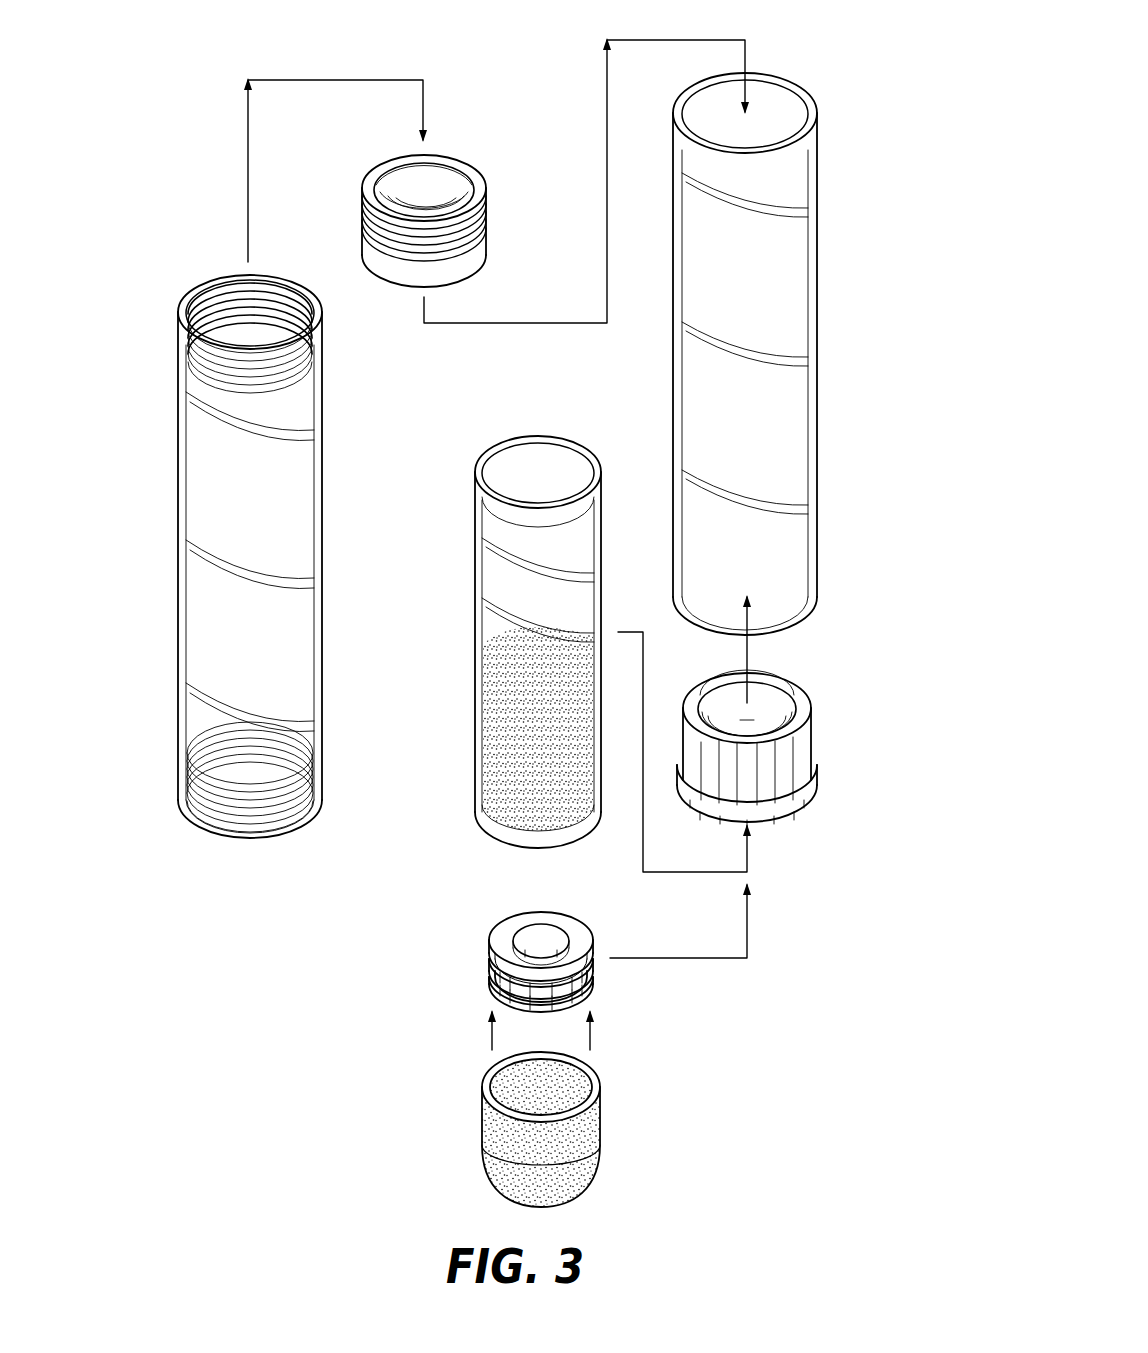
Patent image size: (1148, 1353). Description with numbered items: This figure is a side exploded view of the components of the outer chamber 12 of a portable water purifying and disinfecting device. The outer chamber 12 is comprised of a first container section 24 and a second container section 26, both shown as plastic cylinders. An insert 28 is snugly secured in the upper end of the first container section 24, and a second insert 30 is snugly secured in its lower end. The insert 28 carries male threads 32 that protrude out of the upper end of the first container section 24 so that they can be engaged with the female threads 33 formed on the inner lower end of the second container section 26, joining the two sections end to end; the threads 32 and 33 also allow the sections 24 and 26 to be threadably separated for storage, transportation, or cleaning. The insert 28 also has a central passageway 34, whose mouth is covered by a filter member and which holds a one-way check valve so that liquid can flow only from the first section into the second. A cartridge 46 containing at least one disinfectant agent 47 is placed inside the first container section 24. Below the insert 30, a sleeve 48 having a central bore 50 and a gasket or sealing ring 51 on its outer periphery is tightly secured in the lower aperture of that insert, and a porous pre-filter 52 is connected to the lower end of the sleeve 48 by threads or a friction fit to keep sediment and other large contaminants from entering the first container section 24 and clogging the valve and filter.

The outer chamber 12 is at (190, 1006).
The first container section 24 is at (803, 392).
The second container section 26 is at (207, 590).
The insert 28 is at (483, 247).
The insert 30 is at (806, 738).
The male threads 32 is at (484, 213).
The female threads 33 is at (214, 300).
The central passageway 34 is at (432, 196).
The cartridge 46 is at (493, 570).
The disinfectant agent 47 is at (495, 652).
The sleeve 48 is at (495, 975).
The central bore 50 is at (548, 938).
The sealing ring 51 is at (588, 978).
The pre-filter 52 is at (590, 1113).